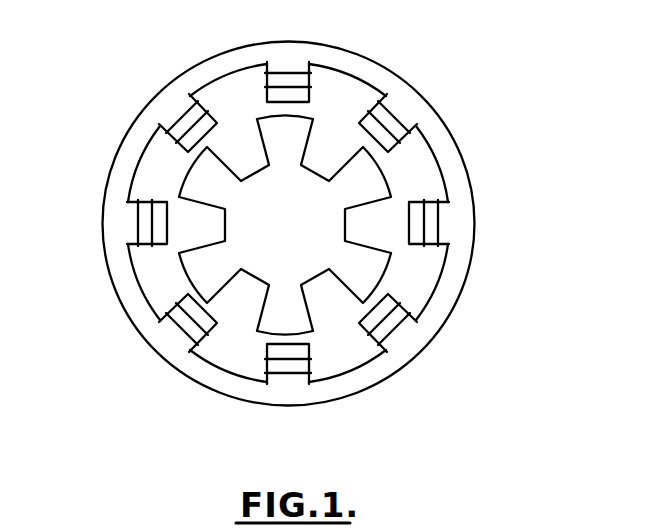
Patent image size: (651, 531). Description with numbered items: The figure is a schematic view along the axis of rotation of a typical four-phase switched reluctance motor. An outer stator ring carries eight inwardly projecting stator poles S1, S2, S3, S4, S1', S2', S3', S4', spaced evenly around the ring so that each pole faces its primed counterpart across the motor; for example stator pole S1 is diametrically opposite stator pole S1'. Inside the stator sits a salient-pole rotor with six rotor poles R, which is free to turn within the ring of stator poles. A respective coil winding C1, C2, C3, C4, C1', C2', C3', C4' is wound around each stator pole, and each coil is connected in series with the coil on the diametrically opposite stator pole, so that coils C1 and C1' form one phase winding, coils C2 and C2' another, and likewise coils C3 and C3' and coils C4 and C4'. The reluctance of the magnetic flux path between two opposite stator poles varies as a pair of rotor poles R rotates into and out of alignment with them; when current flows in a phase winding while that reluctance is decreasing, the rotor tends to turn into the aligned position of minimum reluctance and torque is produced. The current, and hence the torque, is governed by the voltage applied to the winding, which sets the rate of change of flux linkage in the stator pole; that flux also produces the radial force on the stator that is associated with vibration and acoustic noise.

The rotor poles R is at (384, 176).
The stator pole S1 is at (336, 59).
The coil winding C1 is at (293, 43).
The stator pole S2 is at (444, 126).
The coil winding C2 is at (441, 107).
The stator pole S3 is at (478, 245).
The coil winding C3 is at (488, 217).
The stator pole S4 is at (384, 375).
The coil winding C4 is at (438, 335).
The stator pole S1' is at (245, 393).
The coil winding C1' is at (311, 416).
The stator pole S2' is at (133, 322).
The coil winding C2' is at (136, 362).
The stator pole S3' is at (104, 208).
The coil winding C3' is at (93, 235).
The stator pole S4' is at (164, 95).
The coil winding C4' is at (122, 103).